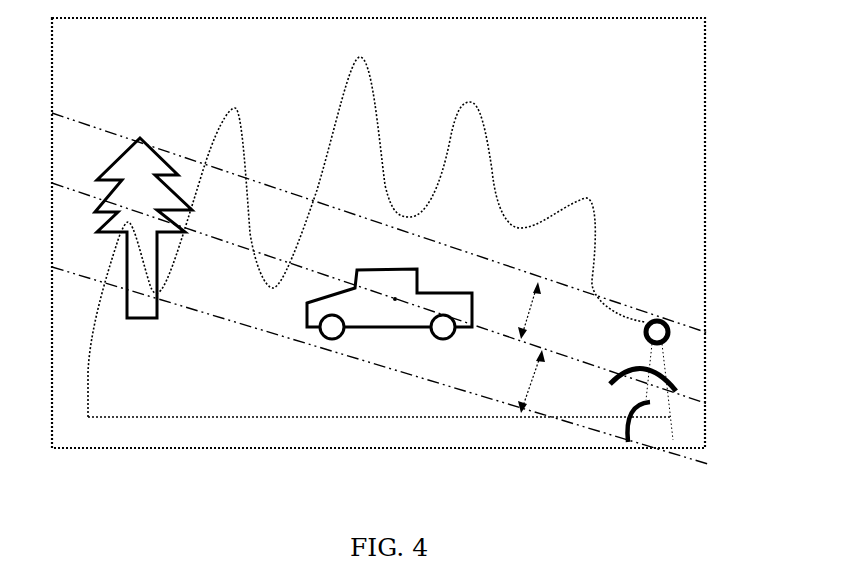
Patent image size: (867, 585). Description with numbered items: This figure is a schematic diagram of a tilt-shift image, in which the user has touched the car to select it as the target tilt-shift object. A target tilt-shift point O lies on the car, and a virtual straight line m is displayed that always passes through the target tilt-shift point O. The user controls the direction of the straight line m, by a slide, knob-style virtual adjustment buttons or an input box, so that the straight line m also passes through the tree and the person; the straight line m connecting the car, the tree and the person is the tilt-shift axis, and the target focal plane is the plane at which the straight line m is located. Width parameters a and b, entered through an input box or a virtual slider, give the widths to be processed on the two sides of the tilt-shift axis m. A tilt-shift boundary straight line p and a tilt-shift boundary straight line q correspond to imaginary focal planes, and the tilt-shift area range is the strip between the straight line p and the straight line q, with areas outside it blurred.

The tilt-shift boundary straight line q is at (386, 228).
The tilt-shift axis m is at (390, 298).
The tilt-shift boundary straight line p is at (386, 373).
The tilt-shift width parameter a is at (528, 310).
The tilt-shift width parameter b is at (526, 381).
The target tilt-shift point O is at (389, 304).